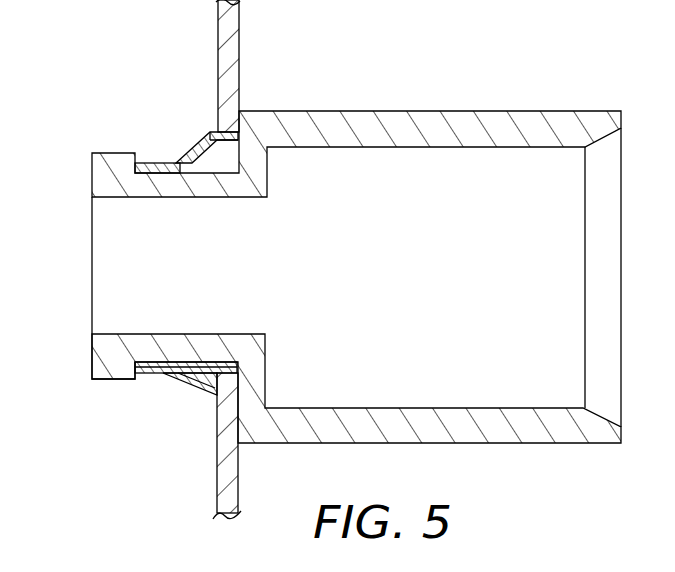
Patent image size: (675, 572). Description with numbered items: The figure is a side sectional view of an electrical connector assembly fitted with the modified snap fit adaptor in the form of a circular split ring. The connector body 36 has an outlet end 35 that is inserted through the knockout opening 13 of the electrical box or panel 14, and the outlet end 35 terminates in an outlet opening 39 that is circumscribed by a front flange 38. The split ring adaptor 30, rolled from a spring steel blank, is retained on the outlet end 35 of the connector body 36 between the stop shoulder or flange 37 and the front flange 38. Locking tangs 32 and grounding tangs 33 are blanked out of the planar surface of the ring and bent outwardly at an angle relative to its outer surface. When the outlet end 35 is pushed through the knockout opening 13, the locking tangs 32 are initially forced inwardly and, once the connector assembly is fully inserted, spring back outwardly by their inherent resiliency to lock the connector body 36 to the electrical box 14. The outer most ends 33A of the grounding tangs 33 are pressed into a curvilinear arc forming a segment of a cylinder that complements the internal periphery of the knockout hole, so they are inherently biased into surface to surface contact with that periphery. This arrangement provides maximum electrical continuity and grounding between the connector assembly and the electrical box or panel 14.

The knockout opening 13 is at (228, 128).
The electrical box 14 is at (240, 42).
The split ring adaptor 30 is at (150, 377).
The locking tangs 32 is at (193, 383).
The grounding tangs 33 is at (203, 143).
The outer most ends 33A is at (230, 137).
The outlet end 35 is at (143, 334).
The connector body 36 is at (395, 112).
The stop shoulder 37 is at (223, 393).
The front flange 38 is at (100, 381).
The outlet opening 39 is at (92, 282).